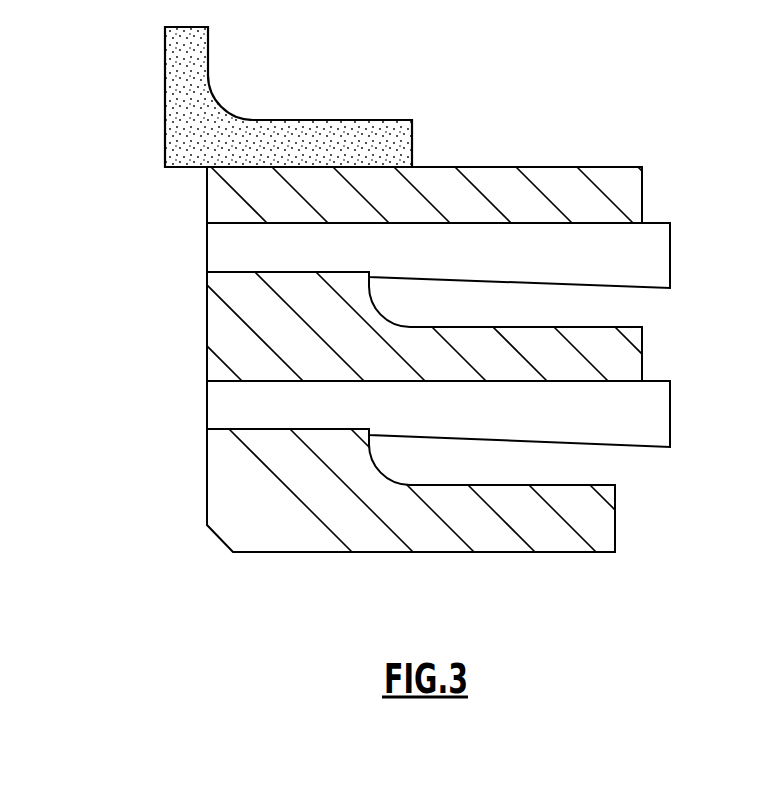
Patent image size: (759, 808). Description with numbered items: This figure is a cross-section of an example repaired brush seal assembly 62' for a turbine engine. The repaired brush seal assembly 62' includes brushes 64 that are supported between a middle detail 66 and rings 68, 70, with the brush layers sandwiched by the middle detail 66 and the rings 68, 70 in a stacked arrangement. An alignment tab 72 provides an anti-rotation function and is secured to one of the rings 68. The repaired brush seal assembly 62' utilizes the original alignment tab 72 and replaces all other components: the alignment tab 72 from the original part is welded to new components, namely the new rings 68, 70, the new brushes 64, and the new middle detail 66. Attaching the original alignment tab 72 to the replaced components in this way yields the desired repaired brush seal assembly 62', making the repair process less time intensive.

The repaired brush seal assembly 62' is at (379, 300).
The brushes 64 is at (652, 260).
The middle detail 66 is at (623, 359).
The ring 68 is at (622, 202).
The ring 70 is at (597, 523).
The alignment tab 72 is at (187, 83).